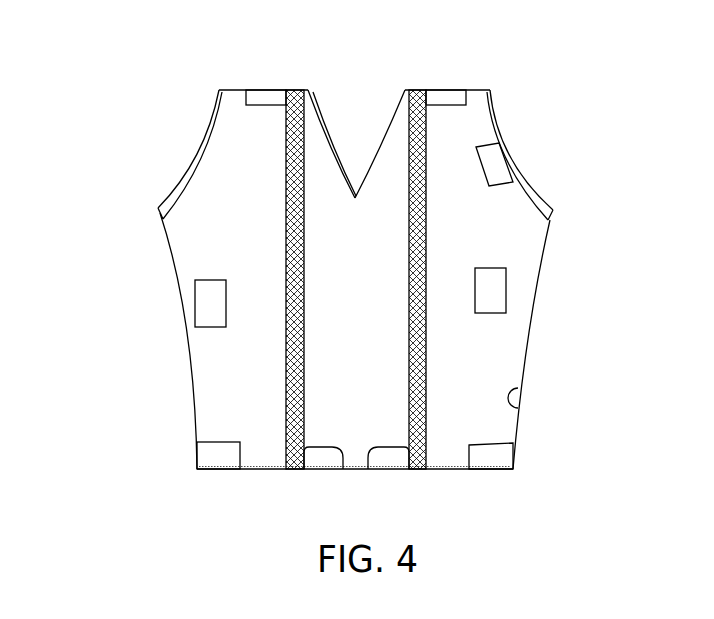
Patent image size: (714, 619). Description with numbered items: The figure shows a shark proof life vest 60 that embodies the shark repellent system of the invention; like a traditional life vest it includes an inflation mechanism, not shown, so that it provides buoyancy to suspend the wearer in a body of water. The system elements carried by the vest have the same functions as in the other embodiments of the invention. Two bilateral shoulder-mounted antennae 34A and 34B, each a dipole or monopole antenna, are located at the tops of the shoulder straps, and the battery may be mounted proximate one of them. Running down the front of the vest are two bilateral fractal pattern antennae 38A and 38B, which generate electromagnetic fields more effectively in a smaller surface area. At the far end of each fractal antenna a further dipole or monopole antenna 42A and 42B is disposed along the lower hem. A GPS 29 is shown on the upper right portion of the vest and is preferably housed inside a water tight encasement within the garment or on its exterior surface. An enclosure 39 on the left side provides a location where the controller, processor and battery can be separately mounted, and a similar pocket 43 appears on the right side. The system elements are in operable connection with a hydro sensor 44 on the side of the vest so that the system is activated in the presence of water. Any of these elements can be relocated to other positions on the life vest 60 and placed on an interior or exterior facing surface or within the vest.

The shark proof life vest 60 is at (77, 213).
The shoulder-mounted antenna 34A is at (263, 92).
The shoulder-mounted antenna 34B is at (441, 92).
The fractal pattern antenna 38A is at (286, 240).
The fractal pattern antenna 38B is at (409, 253).
The GPS 29 is at (503, 160).
The enclosure 39 is at (203, 302).
The right pocket 43 is at (497, 287).
The hydro sensor 44 is at (518, 396).
The dipole or monopole antenna 42A is at (197, 455).
The dipole or monopole antenna 42B is at (513, 452).